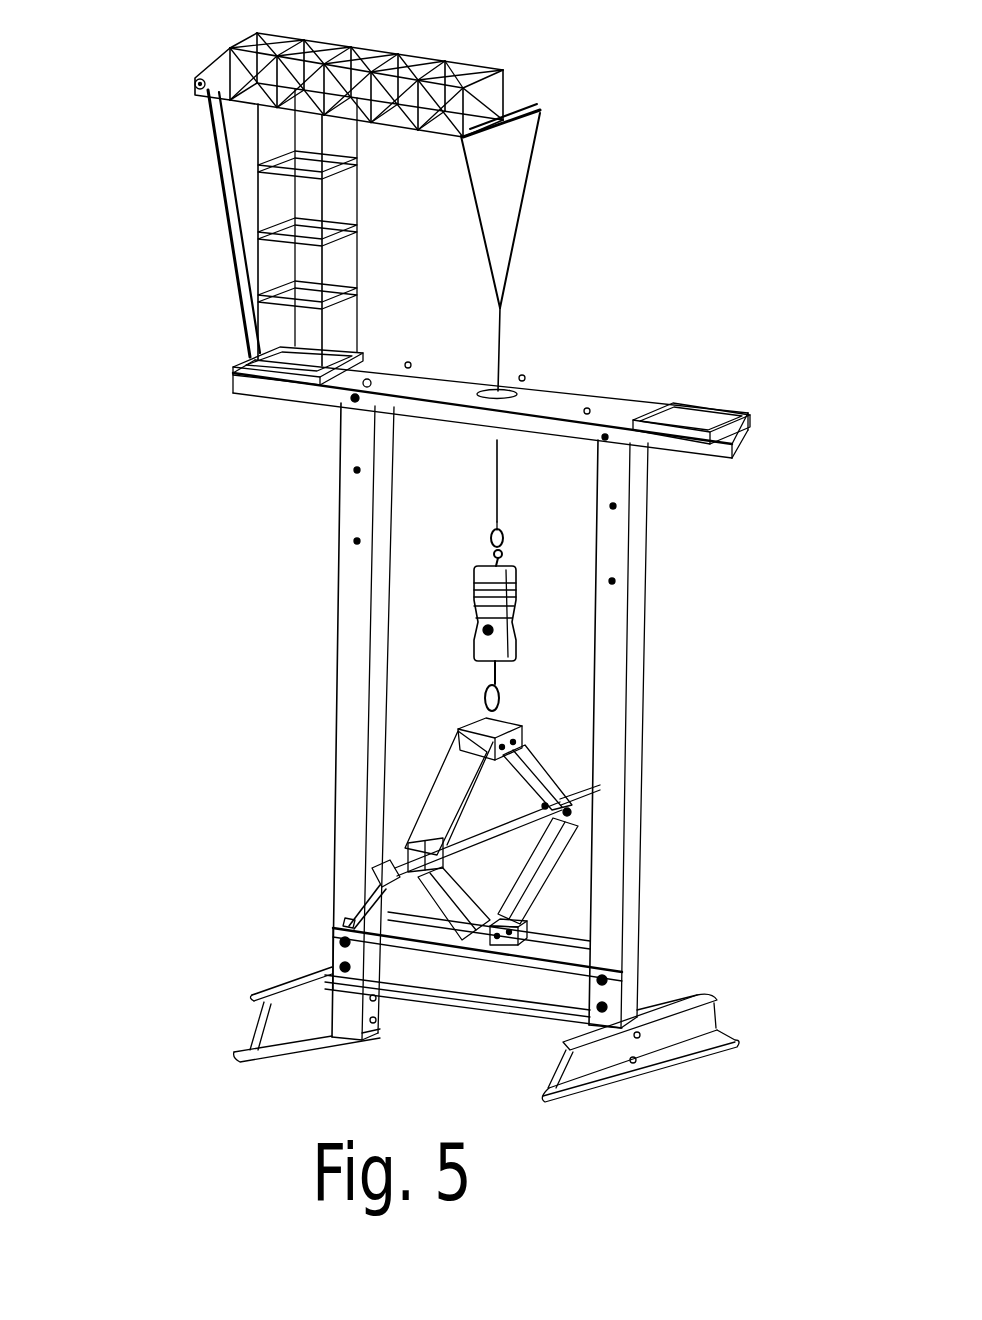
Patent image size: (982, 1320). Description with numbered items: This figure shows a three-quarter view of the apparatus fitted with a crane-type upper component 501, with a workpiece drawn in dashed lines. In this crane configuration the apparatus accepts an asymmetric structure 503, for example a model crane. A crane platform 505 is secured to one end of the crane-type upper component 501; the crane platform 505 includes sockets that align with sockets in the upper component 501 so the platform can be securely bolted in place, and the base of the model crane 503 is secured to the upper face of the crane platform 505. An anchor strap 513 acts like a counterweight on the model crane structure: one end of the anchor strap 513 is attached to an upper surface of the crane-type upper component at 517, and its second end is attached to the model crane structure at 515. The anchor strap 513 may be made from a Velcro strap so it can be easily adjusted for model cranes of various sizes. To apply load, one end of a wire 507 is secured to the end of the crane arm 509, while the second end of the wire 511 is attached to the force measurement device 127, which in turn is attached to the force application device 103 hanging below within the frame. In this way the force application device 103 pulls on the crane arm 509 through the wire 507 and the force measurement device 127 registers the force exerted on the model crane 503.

The force application device 103 is at (540, 764).
The force measurement device 127 is at (523, 613).
The crane-type upper component 501 is at (425, 406).
The asymmetric structure 503 is at (260, 182).
The crane platform 505 is at (330, 384).
The wire 507 is at (549, 117).
The crane arm 509 is at (520, 80).
The second end of the wire 511 is at (506, 536).
The anchor strap 513 is at (215, 140).
The attachment point on the model crane structure 515 is at (196, 82).
The attachment point on the upper surface of the upper component 517 is at (254, 358).